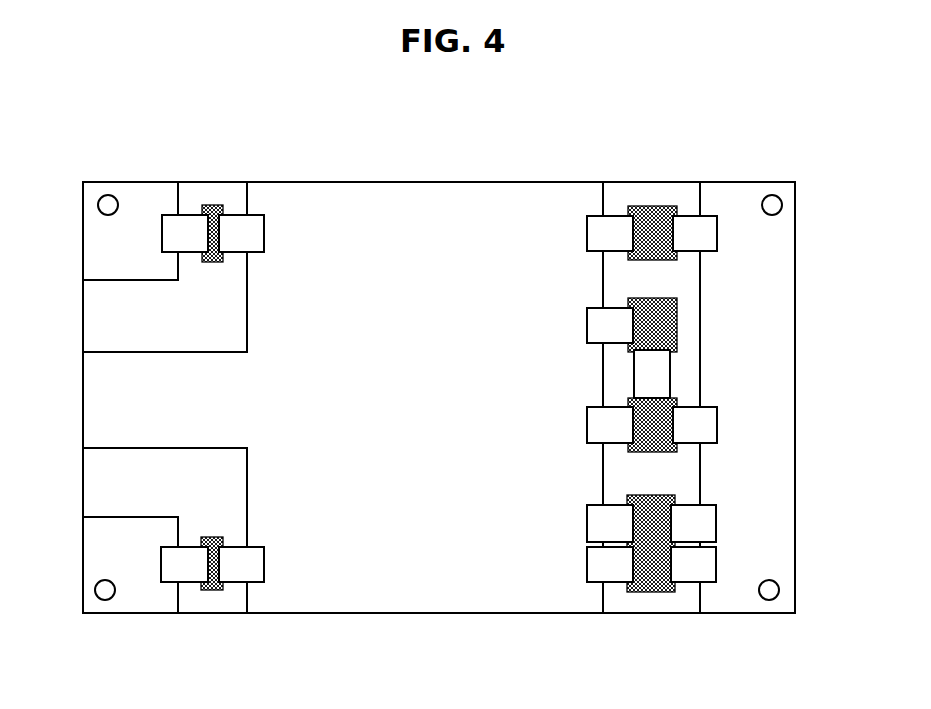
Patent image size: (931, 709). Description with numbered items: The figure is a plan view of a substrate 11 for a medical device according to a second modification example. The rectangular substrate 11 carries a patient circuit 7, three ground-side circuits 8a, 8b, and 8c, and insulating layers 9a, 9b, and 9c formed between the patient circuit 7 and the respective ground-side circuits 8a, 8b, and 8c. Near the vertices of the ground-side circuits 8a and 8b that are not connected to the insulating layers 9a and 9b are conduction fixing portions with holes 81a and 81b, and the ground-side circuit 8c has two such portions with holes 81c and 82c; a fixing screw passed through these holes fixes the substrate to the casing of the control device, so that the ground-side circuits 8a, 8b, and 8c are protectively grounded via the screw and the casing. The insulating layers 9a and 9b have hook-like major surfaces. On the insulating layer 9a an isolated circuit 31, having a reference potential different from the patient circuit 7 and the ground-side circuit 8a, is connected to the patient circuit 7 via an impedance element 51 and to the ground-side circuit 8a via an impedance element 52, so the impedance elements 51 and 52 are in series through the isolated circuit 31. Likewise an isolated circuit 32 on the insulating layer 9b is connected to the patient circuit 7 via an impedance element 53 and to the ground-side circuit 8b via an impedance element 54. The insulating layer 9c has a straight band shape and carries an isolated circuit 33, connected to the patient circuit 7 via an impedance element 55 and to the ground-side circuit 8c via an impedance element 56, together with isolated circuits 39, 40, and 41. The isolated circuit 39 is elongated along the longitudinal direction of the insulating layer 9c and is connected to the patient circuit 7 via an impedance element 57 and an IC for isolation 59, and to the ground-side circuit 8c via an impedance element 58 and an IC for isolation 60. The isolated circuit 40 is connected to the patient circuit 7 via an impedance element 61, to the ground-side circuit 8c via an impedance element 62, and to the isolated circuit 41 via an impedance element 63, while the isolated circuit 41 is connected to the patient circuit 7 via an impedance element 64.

The substrate 11 is at (491, 163).
The patient circuit 7 is at (413, 205).
The ground-side circuit 8a is at (93, 246).
The ground-side circuit 8b is at (93, 546).
The ground-side circuit 8c is at (773, 258).
The insulating layer 9a is at (93, 313).
The insulating layer 9b is at (93, 479).
The insulating layer 9c is at (622, 196).
The isolated circuit 31 is at (210, 205).
The isolated circuit 32 is at (207, 590).
The isolated circuit 33 is at (652, 206).
The isolated circuit 39 is at (650, 575).
The isolated circuit 40 is at (650, 440).
The isolated circuit 41 is at (668, 310).
The impedance element 51 is at (256, 213).
The impedance element 52 is at (175, 213).
The impedance element 53 is at (255, 582).
The impedance element 54 is at (168, 582).
The impedance element 55 is at (597, 214).
The impedance element 56 is at (706, 214).
The impedance element 57 is at (595, 582).
The impedance element 58 is at (705, 582).
The IC for isolation 59 is at (587, 521).
The IC for isolation 60 is at (717, 520).
The impedance element 61 is at (587, 423).
The impedance element 62 is at (717, 425).
The impedance element 63 is at (634, 375).
The impedance element 64 is at (587, 325).
The hole 81a is at (109, 197).
The hole 81b is at (105, 600).
The hole 81c is at (771, 197).
The hole 82c is at (769, 600).